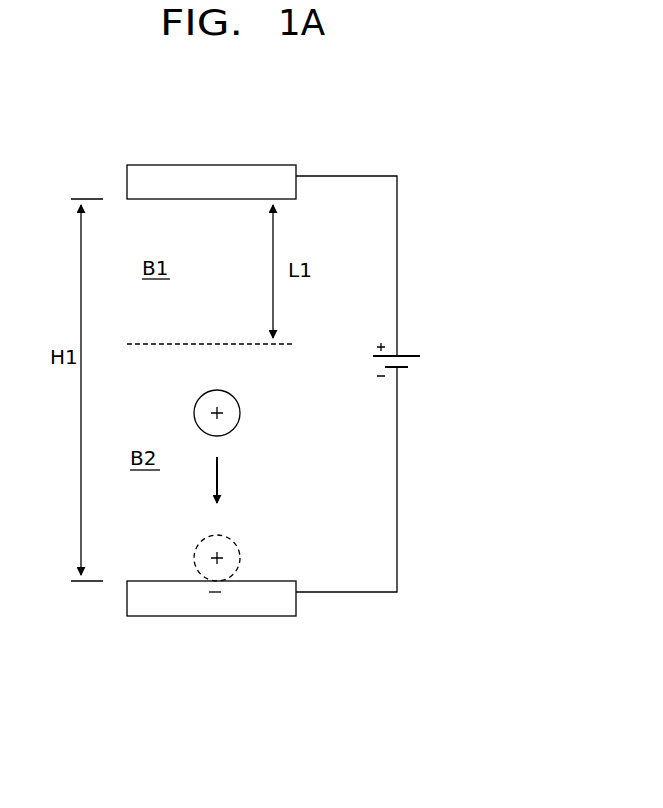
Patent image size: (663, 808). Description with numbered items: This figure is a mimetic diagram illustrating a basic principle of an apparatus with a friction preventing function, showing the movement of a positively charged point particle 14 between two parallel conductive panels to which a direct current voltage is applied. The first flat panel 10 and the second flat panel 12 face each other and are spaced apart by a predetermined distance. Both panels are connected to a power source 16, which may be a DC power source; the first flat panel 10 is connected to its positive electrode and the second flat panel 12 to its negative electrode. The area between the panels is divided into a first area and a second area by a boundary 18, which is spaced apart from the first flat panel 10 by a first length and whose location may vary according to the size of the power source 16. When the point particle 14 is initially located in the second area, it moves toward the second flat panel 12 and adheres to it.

The first flat panel 10 is at (160, 177).
The second flat panel 12 is at (225, 605).
The positively charged point particle 14 is at (236, 400).
The power source 16 is at (424, 337).
The boundary 18 is at (172, 346).